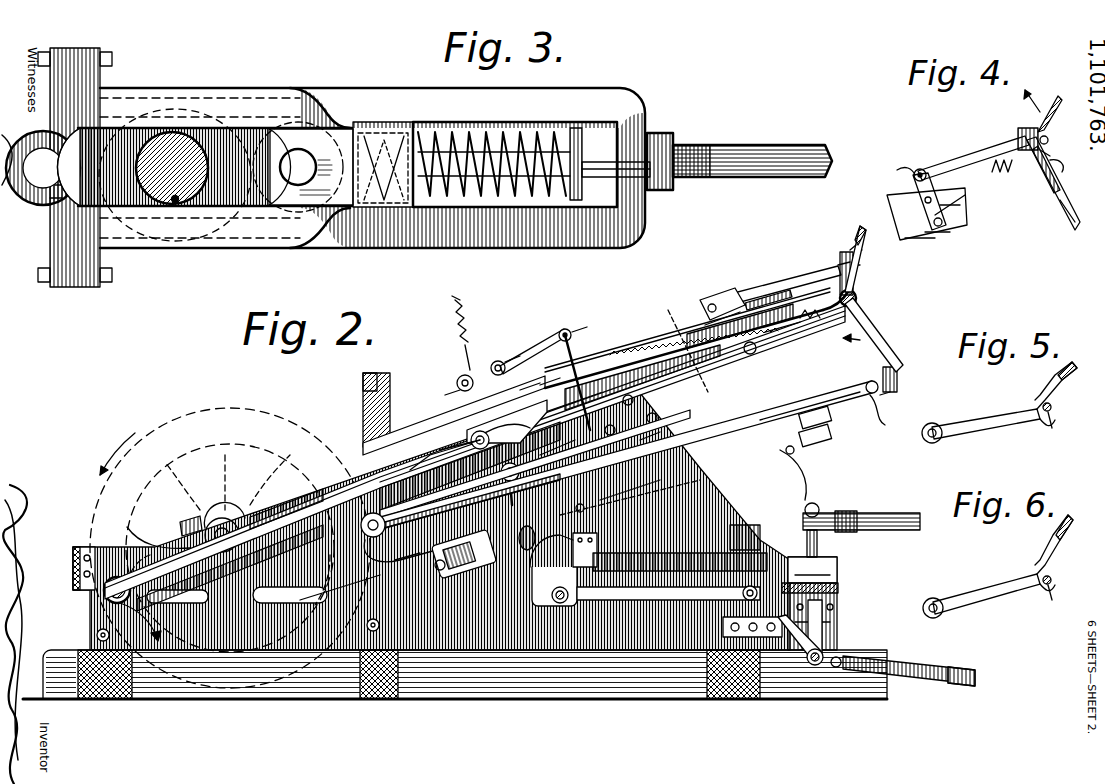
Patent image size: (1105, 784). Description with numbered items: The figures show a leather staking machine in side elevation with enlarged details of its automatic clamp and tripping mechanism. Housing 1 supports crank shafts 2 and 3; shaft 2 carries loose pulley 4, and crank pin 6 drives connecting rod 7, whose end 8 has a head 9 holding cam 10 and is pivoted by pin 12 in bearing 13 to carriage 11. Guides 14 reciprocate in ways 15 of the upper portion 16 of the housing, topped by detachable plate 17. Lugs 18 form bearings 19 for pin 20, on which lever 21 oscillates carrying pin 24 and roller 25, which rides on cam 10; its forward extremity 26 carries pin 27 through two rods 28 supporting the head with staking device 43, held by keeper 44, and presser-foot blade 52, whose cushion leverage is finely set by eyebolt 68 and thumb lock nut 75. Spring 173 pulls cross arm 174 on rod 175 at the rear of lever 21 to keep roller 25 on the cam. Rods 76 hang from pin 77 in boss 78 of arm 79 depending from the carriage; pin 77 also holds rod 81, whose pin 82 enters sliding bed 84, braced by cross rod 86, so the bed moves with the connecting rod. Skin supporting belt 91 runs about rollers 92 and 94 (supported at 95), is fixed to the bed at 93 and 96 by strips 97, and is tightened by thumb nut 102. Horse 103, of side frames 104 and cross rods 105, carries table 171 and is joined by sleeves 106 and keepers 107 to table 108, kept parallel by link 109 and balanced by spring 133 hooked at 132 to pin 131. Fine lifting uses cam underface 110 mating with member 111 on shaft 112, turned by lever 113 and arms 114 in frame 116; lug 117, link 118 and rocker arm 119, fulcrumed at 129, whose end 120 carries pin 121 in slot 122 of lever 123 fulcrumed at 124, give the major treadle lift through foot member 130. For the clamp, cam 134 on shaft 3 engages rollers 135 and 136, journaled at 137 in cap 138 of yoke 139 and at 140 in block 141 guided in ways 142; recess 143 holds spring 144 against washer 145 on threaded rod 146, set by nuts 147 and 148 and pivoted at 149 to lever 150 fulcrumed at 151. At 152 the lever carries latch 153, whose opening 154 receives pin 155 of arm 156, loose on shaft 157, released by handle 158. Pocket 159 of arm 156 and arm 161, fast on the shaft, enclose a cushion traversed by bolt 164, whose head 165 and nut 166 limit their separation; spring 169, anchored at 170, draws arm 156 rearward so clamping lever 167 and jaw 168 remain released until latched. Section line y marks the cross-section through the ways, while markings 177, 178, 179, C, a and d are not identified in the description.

In FIG. 2, the housing 1 is at (455, 546).
In FIG. 2, the crank shaft 2 is at (218, 525).
In FIG. 3, the crank shaft 3 is at (167, 150).
In FIG. 2, the loose pulley 4 is at (230, 538).
In FIG. 2, the crank pin 6 is at (104, 593).
In FIG. 2, the connecting rod 7 is at (160, 560).
In FIG. 2, the end of connecting rod 8 is at (430, 455).
In FIG. 2, the head 9 is at (468, 440).
In FIG. 2, the cam 10 is at (473, 433).
In FIG. 2, the carriage 11 is at (455, 415).
In FIG. 2, the pin 12 is at (440, 430).
In FIG. 2, the bearing 13 is at (612, 413).
In FIG. 2, the guides 14 is at (551, 368).
In FIG. 2, the ways 15 is at (642, 377).
In FIG. 4, the upper portion of housing 16 is at (948, 200).
In FIG. 2, the upper portion of housing 16 is at (740, 328).
In FIG. 2, the detachable plate 17 is at (652, 342).
In FIG. 2, the lugs 18 is at (530, 375).
In FIG. 2, the bearings 19 is at (512, 358).
In FIG. 2, the pin 20 is at (497, 361).
In FIG. 2, the lever 21 is at (545, 345).
In FIG. 2, the pin 24 is at (460, 376).
In FIG. 2, the roller 25 is at (452, 392).
In FIG. 2, the forward extremity of lever 26 is at (567, 329).
In FIG. 2, the pin 27 is at (582, 330).
In FIG. 2, the rods 28 is at (577, 345).
In FIG. 2, the staking device 43 is at (663, 427).
In FIG. 2, the keeper 44 is at (892, 394).
In FIG. 2, the blade 52 is at (610, 436).
In FIG. 2, the eyebolt 68 is at (664, 408).
In FIG. 2, the lock nut 75 is at (642, 398).
In FIG. 2, the rods 76 is at (580, 467).
In FIG. 2, the pin 77 is at (538, 478).
In FIG. 2, the boss 78 is at (477, 503).
In FIG. 2, the arm 79 is at (557, 447).
In FIG. 2, the rod 81 is at (535, 464).
In FIG. 2, the pin 82 is at (422, 543).
In FIG. 2, the sliding bed 84 is at (445, 514).
In FIG. 2, the cross rod 86 is at (400, 558).
In FIG. 2, the skin supporting belt 91 is at (835, 388).
In FIG. 2, the roller 92 is at (450, 570).
In FIG. 2, the belt attachment 93 is at (506, 484).
In FIG. 2, the roller 94 is at (888, 411).
In FIG. 2, the roller support 95 is at (885, 425).
In FIG. 2, the belt attachment 96 is at (648, 450).
In FIG. 2, the strips 97 is at (630, 489).
In FIG. 2, the thumb nut 102 is at (425, 562).
In FIG. 2, the horse 103 is at (808, 472).
In FIG. 2, the side frames 104 is at (810, 470).
In FIG. 2, the cross rods 105 is at (822, 475).
In FIG. 2, the sleeves 106 is at (598, 545).
In FIG. 2, the keepers 107 is at (684, 531).
In FIG. 2, the table 108 is at (680, 556).
In FIG. 2, the link 109 is at (656, 591).
In FIG. 2, the cam underface 110 is at (837, 565).
In FIG. 2, the cam member 111 is at (837, 577).
In FIG. 2, the shaft 112 is at (817, 543).
In FIG. 2, the lever 113 is at (818, 515).
In FIG. 2, the arms 114 is at (861, 517).
In FIG. 2, the frame 116 is at (838, 590).
In FIG. 2, the lug 117 is at (834, 607).
In FIG. 2, the link 118 is at (838, 622).
In FIG. 2, the rocker arm 119 is at (830, 640).
In FIG. 2, the end of rocker arm 120 is at (820, 665).
In FIG. 2, the pin 121 is at (840, 668).
In FIG. 2, the slot 122 is at (825, 650).
In FIG. 2, the lever 123 is at (890, 672).
In FIG. 2, the fulcrum 124 is at (880, 661).
In FIG. 2, the fulcrum 129 is at (815, 665).
In FIG. 2, the foot member 130 is at (960, 670).
In FIG. 2, the pin 131 is at (795, 425).
In FIG. 2, the hook 132 is at (795, 440).
In FIG. 2, the spring 133 is at (727, 538).
In FIG. 3, the cam 134 is at (215, 140).
In FIG. 2, the cam 134 is at (340, 587).
In FIG. 3, the roller 135 is at (62, 187).
In FIG. 2, the roller 135 is at (165, 543).
In FIG. 3, the roller 136 is at (262, 173).
In FIG. 2, the roller 136 is at (230, 520).
In FIG. 3, the journal 137 is at (38, 178).
In FIG. 3, the cap 138 is at (58, 200).
In FIG. 2, the cap 138 is at (185, 522).
In FIG. 3, the yoke 139 is at (333, 88).
In FIG. 2, the yoke 139 is at (268, 515).
In FIG. 3, the journal 140 is at (298, 162).
In FIG. 3, the block 141 is at (395, 206).
In FIG. 3, the ways 142 is at (428, 122).
In FIG. 3, the recess 143 is at (413, 210).
In FIG. 3, the spring 144 is at (535, 135).
In FIG. 3, the washer 145 is at (580, 130).
In FIG. 3, the threaded rod 146 is at (740, 147).
In FIG. 4, the threaded rod 146 is at (930, 240).
In FIG. 2, the threaded rod 146 is at (718, 327).
In FIG. 3, the nut 147 is at (592, 180).
In FIG. 3, the nut 148 is at (660, 135).
In FIG. 4, the pivot 149 is at (950, 232).
In FIG. 2, the pivot 149 is at (757, 350).
In FIG. 4, the lever 150 is at (960, 205).
In FIG. 2, the lever 150 is at (780, 330).
In FIG. 4, the fulcrum 151 is at (927, 206).
In FIG. 2, the fulcrum 151 is at (721, 295).
In FIG. 4, the pivot 152 is at (920, 169).
In FIG. 2, the pivot 152 is at (734, 292).
In FIG. 4, the latch 153 is at (972, 158).
In FIG. 5, the latch 153 is at (981, 420).
In FIG. 6, the latch 153 is at (981, 590).
In FIG. 2, the latch 153 is at (800, 278).
In FIG. 5, the opening 154 is at (1053, 428).
In FIG. 6, the opening 154 is at (1053, 600).
In FIG. 4, the pin 155 is at (1046, 140).
In FIG. 5, the pin 155 is at (1045, 410).
In FIG. 6, the pin 155 is at (1045, 583).
In FIG. 4, the arm 156 is at (1047, 154).
In FIG. 2, the arm 156 is at (852, 248).
In FIG. 4, the shaft 157 is at (1048, 170).
In FIG. 2, the shaft 157 is at (857, 298).
In FIG. 4, the handle 158 is at (1056, 100).
In FIG. 5, the handle 158 is at (1066, 372).
In FIG. 6, the handle 158 is at (1063, 527).
In FIG. 2, the handle 158 is at (862, 228).
In FIG. 4, the pocket 159 is at (1022, 130).
In FIG. 4, the arm 161 is at (1065, 172).
In FIG. 2, the arm 161 is at (853, 280).
In FIG. 2, the bolt 164 is at (860, 265).
In FIG. 2, the head 165 is at (840, 262).
In FIG. 2, the nut 166 is at (869, 246).
In FIG. 4, the clamping lever 167 is at (1065, 210).
In FIG. 2, the clamping lever 167 is at (870, 325).
In FIG. 2, the clamping jaw 168 is at (897, 380).
In FIG. 4, the spring 169 is at (998, 175).
In FIG. 2, the spring 169 is at (821, 319).
In FIG. 2, the fixed point 170 is at (768, 287).
In FIG. 2, the table 171 is at (815, 400).
In FIG. 2, the spring 173 is at (470, 350).
In FIG. 2, the cross arm 174 is at (462, 308).
In FIG. 2, the rod 175 is at (445, 295).
In FIG. 3, the circle 177 is at (172, 108).
In FIG. 3, the flange 178 is at (62, 262).
In FIG. 5, the spring 179 is at (1038, 412).
In FIG. 6, the spring 179 is at (1038, 578).
In FIG. 4, the point C is at (902, 179).
In FIG. 2, the arrow a is at (140, 622).
In FIG. 2, the arrow d is at (856, 344).
In FIG. 2, the section line y— y is at (689, 348).